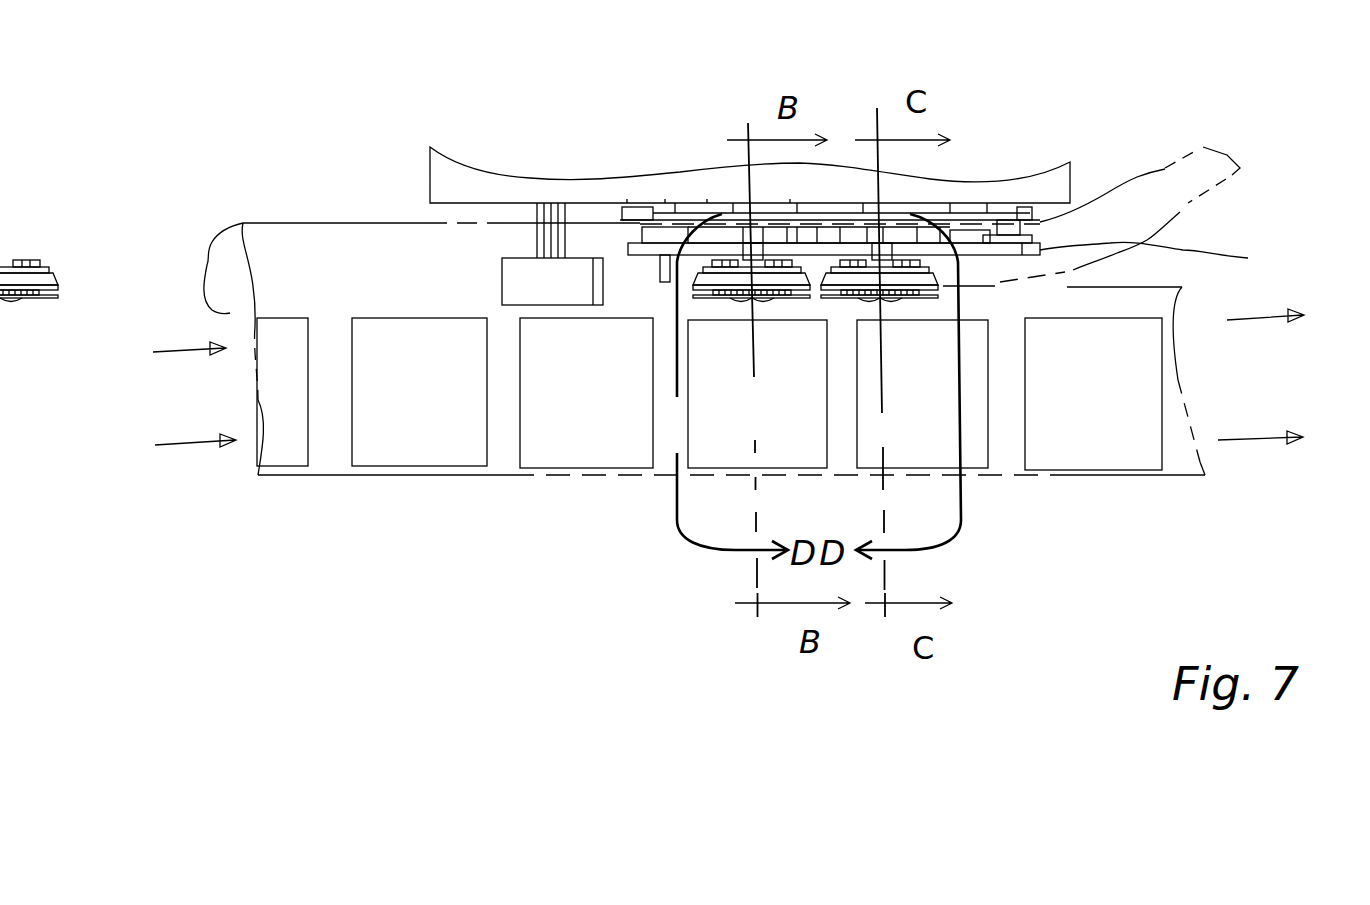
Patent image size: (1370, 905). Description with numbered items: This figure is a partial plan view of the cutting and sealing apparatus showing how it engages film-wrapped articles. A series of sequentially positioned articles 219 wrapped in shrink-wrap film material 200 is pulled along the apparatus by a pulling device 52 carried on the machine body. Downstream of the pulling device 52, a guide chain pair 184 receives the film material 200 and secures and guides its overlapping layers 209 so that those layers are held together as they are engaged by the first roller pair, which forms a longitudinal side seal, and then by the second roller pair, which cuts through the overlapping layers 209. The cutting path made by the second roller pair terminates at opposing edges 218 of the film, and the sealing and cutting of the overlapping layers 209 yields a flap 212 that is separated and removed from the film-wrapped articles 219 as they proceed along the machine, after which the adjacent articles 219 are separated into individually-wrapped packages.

The film material 200 is at (215, 232).
The overlapping layers 209 is at (207, 266).
The articles 219 is at (285, 466).
The pulling device 52 is at (512, 305).
The opposing edges 218 is at (1137, 177).
The flap 212 is at (1230, 150).
The guide chain pair 184 is at (1171, 260).